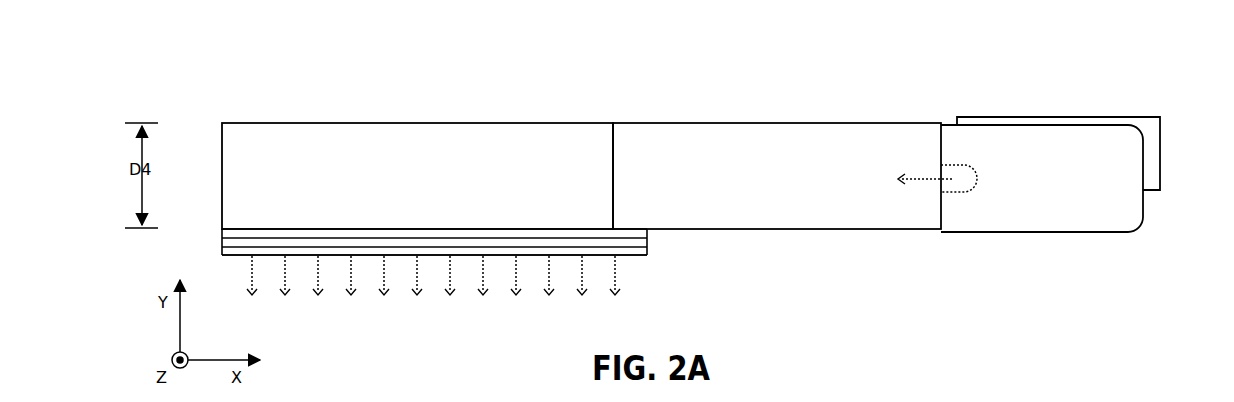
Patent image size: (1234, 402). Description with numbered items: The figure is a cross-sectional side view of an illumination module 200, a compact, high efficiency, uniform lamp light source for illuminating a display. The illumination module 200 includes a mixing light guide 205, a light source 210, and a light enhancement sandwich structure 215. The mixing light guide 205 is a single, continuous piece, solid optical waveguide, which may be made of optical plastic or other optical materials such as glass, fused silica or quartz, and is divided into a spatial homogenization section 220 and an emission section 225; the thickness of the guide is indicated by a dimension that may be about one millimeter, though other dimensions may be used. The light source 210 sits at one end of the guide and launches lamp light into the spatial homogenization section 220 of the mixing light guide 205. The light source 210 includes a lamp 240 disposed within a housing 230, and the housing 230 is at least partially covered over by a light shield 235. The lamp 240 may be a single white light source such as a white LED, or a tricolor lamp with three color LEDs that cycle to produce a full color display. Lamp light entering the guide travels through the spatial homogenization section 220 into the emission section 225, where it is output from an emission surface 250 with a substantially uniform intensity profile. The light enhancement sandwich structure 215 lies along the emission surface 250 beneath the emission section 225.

The illumination module 200 is at (1023, 300).
The mixing light guide 205 is at (942, 108).
The light source 210 is at (1163, 108).
The light enhancement sandwich structure 215 is at (209, 242).
The spatial homogenization section 220 is at (833, 194).
The emission section 225 is at (475, 193).
The housing 230 is at (1095, 233).
The light shield 235 is at (1160, 152).
The lamp 240 is at (977, 178).
The emission surface 250 is at (420, 238).